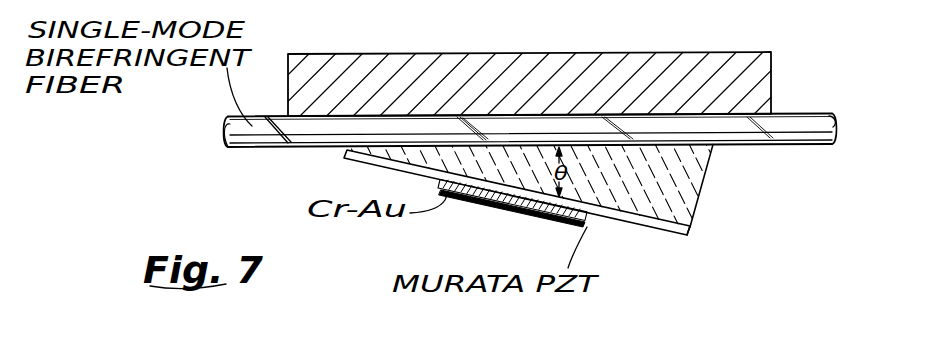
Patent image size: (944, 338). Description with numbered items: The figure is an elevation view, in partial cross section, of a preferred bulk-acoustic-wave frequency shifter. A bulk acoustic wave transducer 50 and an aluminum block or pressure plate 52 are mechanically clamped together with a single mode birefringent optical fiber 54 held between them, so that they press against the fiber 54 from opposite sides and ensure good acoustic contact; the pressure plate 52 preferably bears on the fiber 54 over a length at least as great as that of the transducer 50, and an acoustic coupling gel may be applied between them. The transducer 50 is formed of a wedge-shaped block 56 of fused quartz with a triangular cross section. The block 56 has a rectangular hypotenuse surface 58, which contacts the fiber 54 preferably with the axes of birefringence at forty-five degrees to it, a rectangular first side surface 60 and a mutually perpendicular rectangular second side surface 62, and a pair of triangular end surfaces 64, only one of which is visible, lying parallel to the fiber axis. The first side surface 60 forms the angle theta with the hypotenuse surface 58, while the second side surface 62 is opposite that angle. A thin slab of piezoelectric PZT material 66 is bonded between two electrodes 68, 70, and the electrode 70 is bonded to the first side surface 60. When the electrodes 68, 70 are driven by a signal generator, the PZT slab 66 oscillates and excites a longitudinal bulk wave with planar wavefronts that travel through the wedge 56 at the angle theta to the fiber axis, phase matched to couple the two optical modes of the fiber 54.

The bulk acoustic wave transducer 50 is at (713, 235).
The pressure plate 52 is at (600, 52).
The single mode birefringent optical fiber 54 is at (813, 118).
The wedge-shaped block 56 is at (702, 208).
The hypotenuse surface 58 is at (693, 142).
The first side surface 60 is at (685, 238).
The second side surface 62 is at (703, 182).
The end surfaces 64 is at (640, 184).
The piezoelectric (PZT) slab 66 is at (488, 205).
The electrode 68 is at (533, 216).
The electrode 70 is at (368, 160).